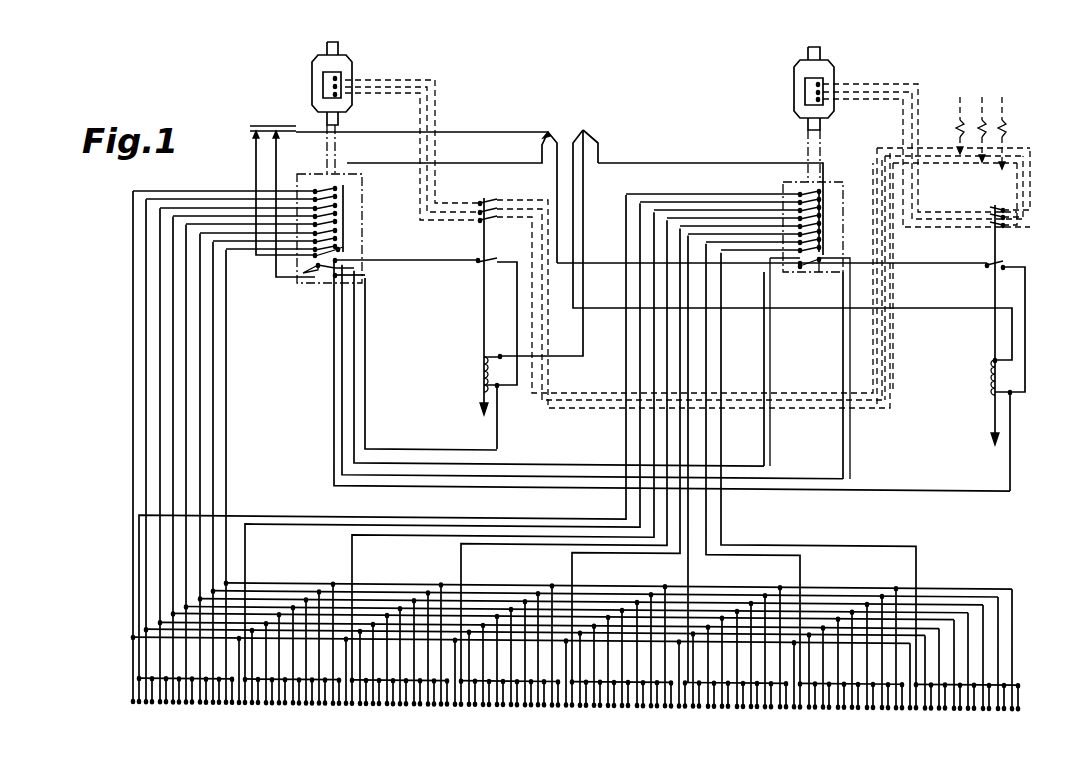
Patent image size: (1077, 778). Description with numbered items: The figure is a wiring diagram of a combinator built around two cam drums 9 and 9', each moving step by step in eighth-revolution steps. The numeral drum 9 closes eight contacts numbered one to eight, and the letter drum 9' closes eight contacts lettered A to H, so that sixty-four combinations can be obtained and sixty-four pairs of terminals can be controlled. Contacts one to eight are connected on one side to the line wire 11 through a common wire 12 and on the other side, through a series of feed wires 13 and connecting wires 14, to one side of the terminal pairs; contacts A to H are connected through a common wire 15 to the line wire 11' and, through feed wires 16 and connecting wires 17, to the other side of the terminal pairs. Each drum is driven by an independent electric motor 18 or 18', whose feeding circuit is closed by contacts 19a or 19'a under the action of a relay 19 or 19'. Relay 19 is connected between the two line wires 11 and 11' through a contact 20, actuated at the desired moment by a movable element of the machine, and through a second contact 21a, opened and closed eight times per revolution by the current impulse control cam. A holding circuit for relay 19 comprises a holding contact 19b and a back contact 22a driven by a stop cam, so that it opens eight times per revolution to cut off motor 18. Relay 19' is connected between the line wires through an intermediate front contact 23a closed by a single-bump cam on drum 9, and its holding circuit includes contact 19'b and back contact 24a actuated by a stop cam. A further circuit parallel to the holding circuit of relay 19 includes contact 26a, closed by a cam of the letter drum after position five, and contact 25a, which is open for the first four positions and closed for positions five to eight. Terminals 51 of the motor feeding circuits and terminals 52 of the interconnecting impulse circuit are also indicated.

The cam drum 9 is at (339, 228).
The cam drum 9' is at (827, 227).
The line wire 11 is at (430, 186).
The line wire 11' is at (756, 235).
The common wire 12 is at (373, 165).
The feed wires 13 is at (203, 440).
The connecting wires 14 is at (198, 646).
The common wire 15 is at (662, 163).
The feed wires 16 is at (626, 326).
The connecting wires 17 is at (636, 676).
The electric motor 18 is at (348, 108).
The electric motor 18' is at (832, 114).
The relay 19 is at (473, 323).
The contacts 19a is at (498, 207).
The holding contact 19b is at (499, 261).
The relay 19' is at (980, 348).
The contacts 19'a is at (1030, 187).
The contact 19'b is at (1026, 314).
The contact 20 is at (278, 124).
The contact 21a is at (346, 248).
The back contact 22a is at (350, 259).
The front contact 23a is at (322, 282).
The back contact 24a is at (821, 272).
The contact 25a is at (350, 277).
The contact 26a is at (801, 270).
The terminals 51 is at (956, 150).
The terminals 52 is at (276, 134).